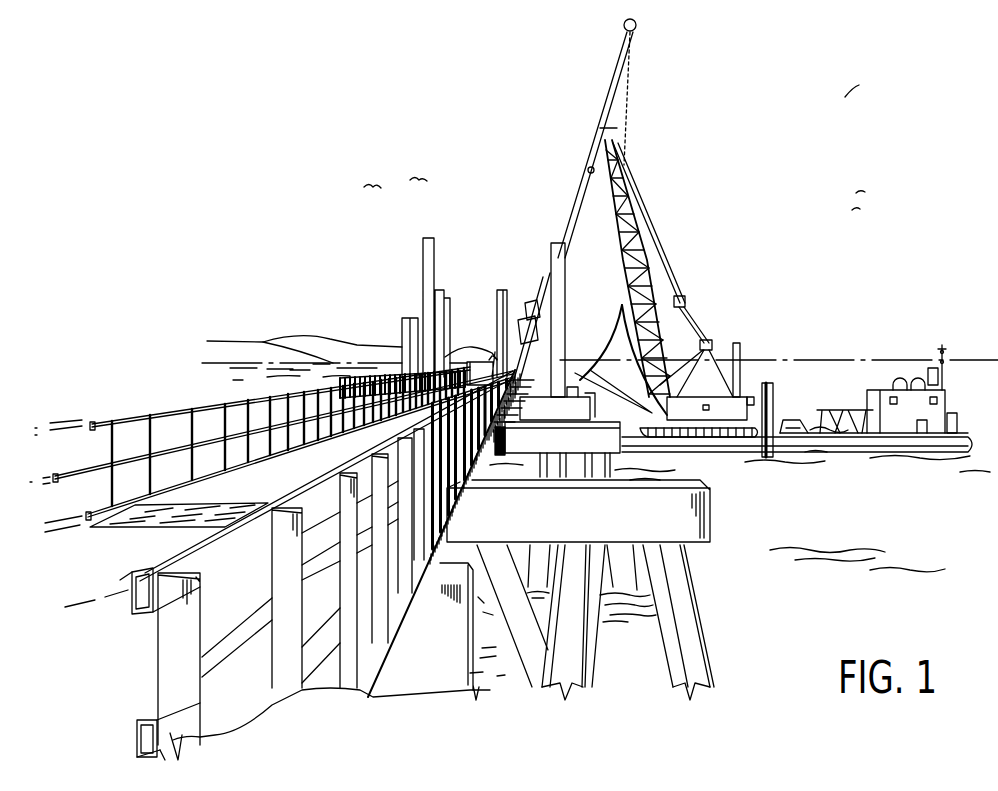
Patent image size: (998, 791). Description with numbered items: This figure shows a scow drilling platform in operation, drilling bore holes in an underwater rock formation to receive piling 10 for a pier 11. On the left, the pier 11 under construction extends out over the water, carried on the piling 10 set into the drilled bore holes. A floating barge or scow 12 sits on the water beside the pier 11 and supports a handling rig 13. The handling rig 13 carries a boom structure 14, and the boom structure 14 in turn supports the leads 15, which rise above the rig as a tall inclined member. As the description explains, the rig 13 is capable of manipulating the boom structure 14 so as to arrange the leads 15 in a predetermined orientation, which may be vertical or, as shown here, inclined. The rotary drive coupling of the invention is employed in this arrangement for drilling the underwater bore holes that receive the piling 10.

The piling 10 is at (680, 607).
The pier 11 is at (198, 407).
The floating barge or scow 12 is at (830, 396).
The handling rig 13 is at (681, 349).
The boom structure 14 is at (636, 207).
The leads 15 is at (605, 99).